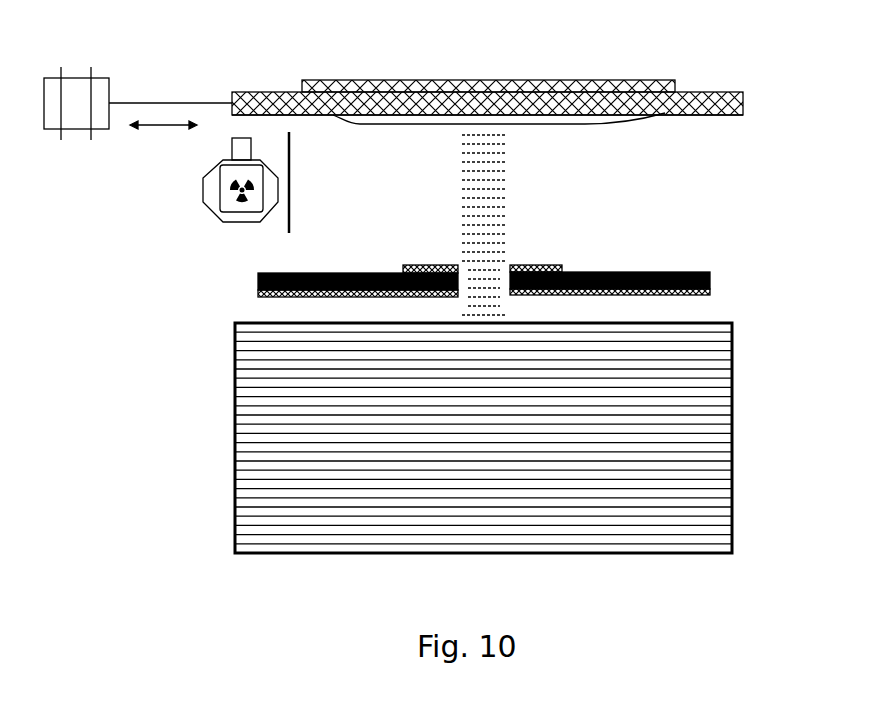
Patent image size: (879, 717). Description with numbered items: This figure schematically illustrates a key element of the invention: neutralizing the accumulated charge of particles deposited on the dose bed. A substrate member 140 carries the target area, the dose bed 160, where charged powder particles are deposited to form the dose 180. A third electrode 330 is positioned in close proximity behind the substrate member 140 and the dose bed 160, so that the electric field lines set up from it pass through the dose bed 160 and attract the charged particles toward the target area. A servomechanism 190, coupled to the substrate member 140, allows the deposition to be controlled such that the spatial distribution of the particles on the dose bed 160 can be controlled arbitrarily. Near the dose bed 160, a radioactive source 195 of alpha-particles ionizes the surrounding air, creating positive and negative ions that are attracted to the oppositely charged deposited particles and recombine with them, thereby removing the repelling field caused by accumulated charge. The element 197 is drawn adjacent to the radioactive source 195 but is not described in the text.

The servomechanism 190 is at (75, 77).
The radioactive source 195 is at (203, 192).
The collimator plate 197 is at (292, 157).
The third electrode 330 is at (673, 82).
The substrate member 140 is at (743, 102).
The dose bed 160 is at (663, 113).
The dose 180 is at (577, 118).